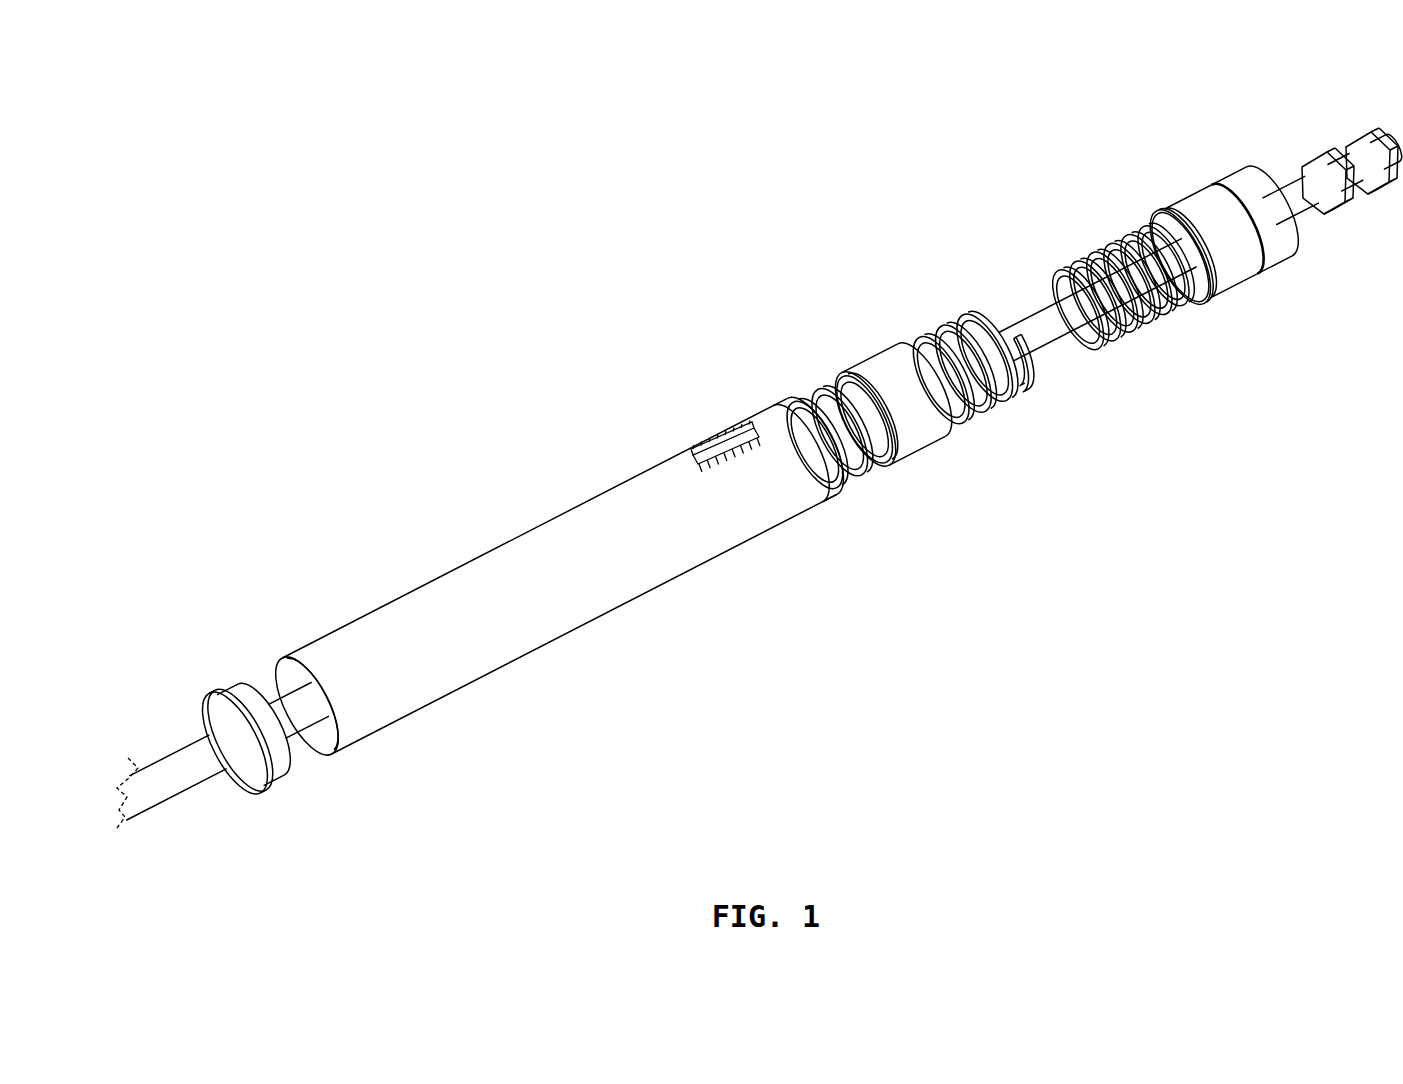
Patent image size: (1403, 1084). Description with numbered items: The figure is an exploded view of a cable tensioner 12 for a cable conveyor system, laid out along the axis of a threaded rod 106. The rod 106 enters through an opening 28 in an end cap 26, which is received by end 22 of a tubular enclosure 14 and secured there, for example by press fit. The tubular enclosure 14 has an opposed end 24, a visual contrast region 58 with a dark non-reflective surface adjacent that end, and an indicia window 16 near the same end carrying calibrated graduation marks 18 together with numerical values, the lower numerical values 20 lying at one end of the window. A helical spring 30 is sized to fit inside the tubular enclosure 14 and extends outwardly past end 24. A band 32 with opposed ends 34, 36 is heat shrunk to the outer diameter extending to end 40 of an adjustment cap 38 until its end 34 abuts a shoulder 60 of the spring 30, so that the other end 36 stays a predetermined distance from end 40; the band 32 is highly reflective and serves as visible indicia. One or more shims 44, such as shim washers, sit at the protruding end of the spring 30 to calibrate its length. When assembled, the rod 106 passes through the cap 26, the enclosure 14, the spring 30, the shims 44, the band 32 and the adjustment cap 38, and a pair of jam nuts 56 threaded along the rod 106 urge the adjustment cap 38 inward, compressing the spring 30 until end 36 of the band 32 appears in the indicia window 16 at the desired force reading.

The cable tensioner 12 is at (963, 589).
The tubular enclosure 14 is at (515, 553).
The indicia window 16 is at (697, 460).
The graduation marks 18 is at (699, 456).
The lower numerical values 20 is at (732, 462).
The end of tubular enclosure 22 is at (282, 656).
The opposed end of tubular enclosure 24 is at (772, 406).
The end cap 26 is at (265, 788).
The opening 28 is at (236, 766).
The helical spring 30 is at (990, 405).
The band 32 is at (878, 370).
The end of band 34 is at (900, 345).
The opposed end of band 36 is at (880, 463).
The adjustment cap 38 is at (1230, 170).
The end of adjustment cap 40 is at (1210, 295).
The shims 44 is at (1080, 350).
The jam nuts 56 is at (1362, 137).
The visual contrast region 58 is at (812, 483).
The shoulder of spring 60 is at (1259, 268).
The threaded rod 106 is at (175, 763).